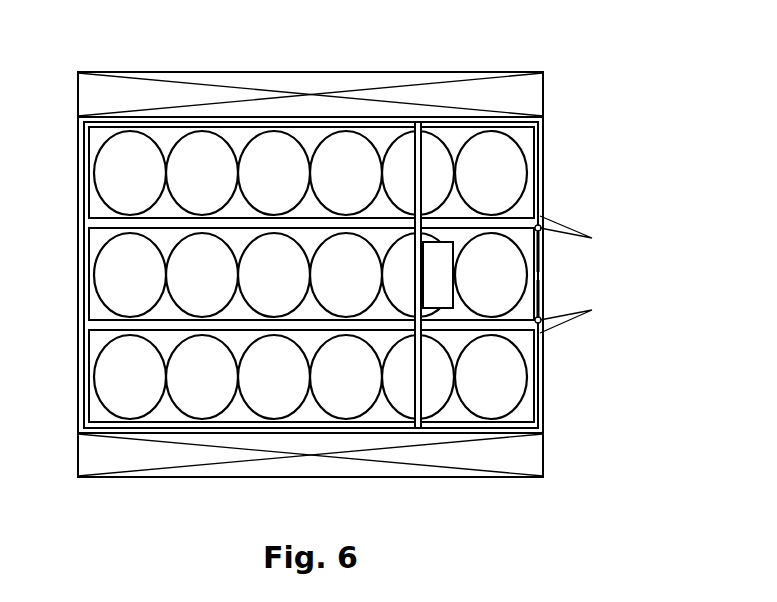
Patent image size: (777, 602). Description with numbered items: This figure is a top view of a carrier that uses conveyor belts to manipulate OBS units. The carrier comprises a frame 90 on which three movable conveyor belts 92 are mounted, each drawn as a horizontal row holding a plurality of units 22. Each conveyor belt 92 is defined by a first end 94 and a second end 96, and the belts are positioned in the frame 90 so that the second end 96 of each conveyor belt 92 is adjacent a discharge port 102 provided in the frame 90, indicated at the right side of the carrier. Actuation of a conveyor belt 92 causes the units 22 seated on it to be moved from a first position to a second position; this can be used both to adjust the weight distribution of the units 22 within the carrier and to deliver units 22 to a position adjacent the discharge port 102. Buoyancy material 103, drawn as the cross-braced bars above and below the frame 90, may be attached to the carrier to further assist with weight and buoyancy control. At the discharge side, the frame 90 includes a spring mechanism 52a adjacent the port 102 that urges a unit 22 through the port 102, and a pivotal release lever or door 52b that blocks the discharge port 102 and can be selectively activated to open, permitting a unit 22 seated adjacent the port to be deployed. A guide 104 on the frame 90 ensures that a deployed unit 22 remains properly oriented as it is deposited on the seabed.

The unit 22 is at (347, 147).
The frame 90 is at (235, 122).
The conveyor belt 92 is at (95, 143).
The first end 94 is at (100, 118).
The second end 96 is at (457, 120).
The discharge port 102 is at (553, 186).
The buoyancy material 103 is at (307, 72).
The spring mechanism 52a is at (445, 252).
The pivotal release lever or door 52b is at (541, 292).
The guide 104 is at (568, 320).